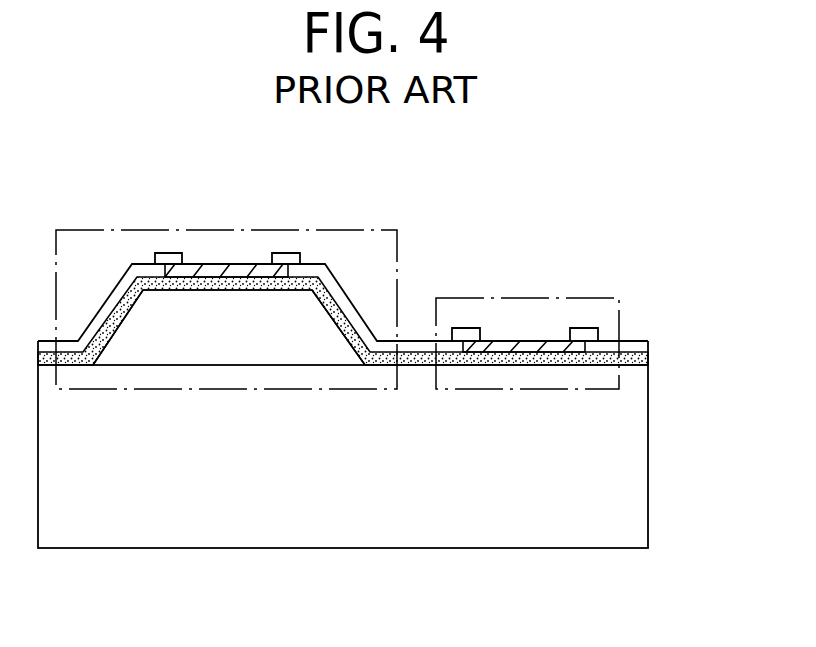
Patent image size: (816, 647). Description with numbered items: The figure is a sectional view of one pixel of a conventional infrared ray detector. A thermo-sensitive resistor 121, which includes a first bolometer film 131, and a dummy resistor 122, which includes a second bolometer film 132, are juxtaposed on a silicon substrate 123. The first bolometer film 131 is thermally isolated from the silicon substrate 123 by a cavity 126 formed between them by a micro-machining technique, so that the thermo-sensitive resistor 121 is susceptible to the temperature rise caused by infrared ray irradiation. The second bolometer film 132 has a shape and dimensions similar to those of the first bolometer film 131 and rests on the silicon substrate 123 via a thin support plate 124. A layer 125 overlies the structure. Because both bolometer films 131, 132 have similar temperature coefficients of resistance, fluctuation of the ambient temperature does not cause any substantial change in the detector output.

The thermo-sensitive resistor 121 is at (103, 390).
The dummy resistor 122 is at (470, 389).
The silicon substrate 123 is at (335, 515).
The support plate 124 is at (642, 357).
The gate insulating layer 125 is at (356, 300).
The cavity 126 is at (255, 307).
The first bolometer film 131 is at (212, 263).
The second bolometer film 132 is at (530, 340).